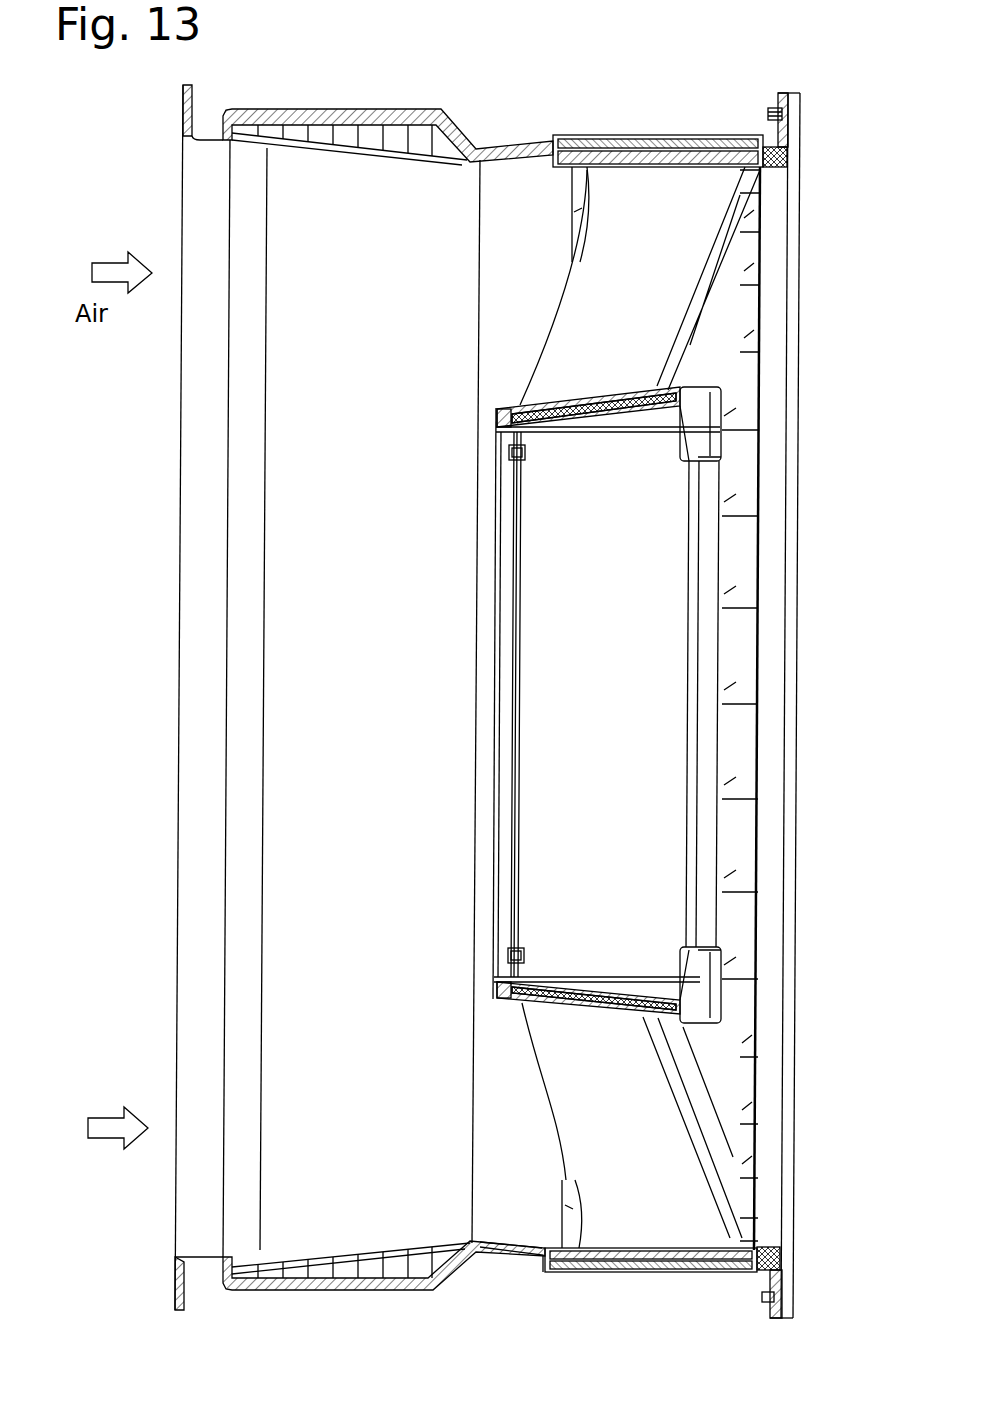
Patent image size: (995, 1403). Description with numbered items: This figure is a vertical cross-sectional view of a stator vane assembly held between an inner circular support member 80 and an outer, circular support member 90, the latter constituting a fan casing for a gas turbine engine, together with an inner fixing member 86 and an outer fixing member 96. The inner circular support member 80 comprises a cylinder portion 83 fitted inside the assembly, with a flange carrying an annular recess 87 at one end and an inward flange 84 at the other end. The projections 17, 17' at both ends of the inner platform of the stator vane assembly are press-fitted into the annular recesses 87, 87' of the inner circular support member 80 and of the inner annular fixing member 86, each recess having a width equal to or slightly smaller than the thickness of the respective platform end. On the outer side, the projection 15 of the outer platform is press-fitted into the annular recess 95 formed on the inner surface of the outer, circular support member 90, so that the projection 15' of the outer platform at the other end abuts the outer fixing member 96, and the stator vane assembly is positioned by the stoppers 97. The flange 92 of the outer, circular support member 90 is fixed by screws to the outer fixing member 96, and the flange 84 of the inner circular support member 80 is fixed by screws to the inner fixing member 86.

The outer circular support member 90 is at (490, 118).
The flange 92 is at (778, 100).
The stopper 97 is at (790, 158).
The outer fixing member 96 is at (808, 235).
The end portion of inner platform 17 is at (595, 669).
The end of inner platform 17' is at (586, 701).
The annular recess 87 is at (732, 702).
The annular recess 87' is at (461, 707).
The cylinder portion 83 is at (622, 434).
The inward flange 84 is at (521, 456).
The inner annular fixing member 86 is at (492, 775).
The inner circular support member 80 is at (596, 965).
The annular recess 95 is at (545, 1252).
The end portion of outer platform 15 is at (651, 1294).
The end of outer platform 15' is at (651, 1299).